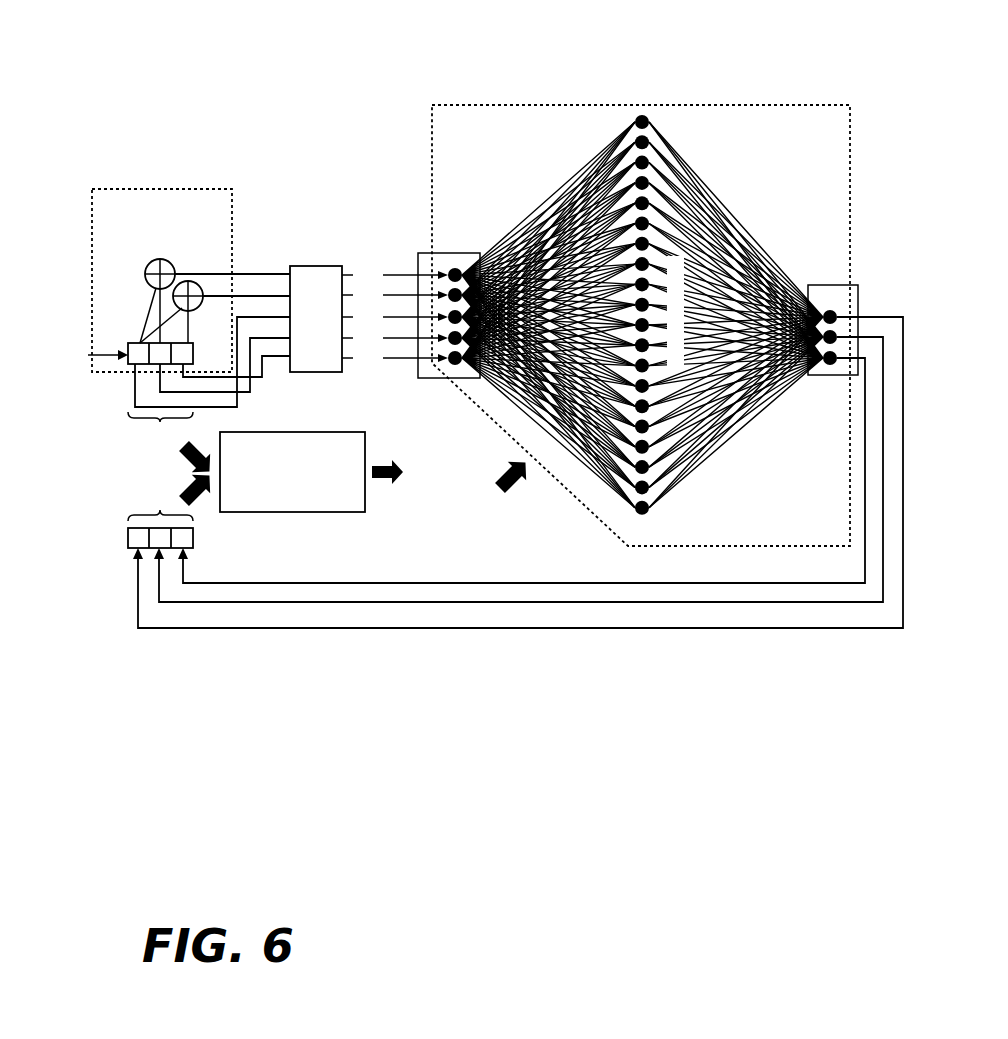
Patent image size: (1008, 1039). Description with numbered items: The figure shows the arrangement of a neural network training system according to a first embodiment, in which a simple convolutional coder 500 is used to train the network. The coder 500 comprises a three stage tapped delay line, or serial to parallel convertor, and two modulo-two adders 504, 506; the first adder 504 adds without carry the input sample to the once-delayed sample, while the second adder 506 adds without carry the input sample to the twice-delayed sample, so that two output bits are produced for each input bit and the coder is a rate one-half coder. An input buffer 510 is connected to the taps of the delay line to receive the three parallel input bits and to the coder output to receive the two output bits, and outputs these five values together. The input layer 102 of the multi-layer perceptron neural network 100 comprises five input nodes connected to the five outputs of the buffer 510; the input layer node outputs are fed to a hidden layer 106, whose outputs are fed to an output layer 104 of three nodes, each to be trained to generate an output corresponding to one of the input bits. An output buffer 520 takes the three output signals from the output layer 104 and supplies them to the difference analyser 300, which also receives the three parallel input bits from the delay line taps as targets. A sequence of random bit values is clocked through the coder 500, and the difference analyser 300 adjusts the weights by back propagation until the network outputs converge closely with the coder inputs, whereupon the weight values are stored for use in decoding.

The multi-layer perceptron neural network 100 is at (772, 103).
The input layer 102 is at (458, 253).
The output layer 104 is at (817, 285).
The hidden layer 106 is at (640, 115).
The difference analyser 300 is at (295, 513).
The convolutional coder 500 is at (158, 188).
The modulo-2 adder 504 is at (145, 274).
The modulo-2 adder 506 is at (200, 284).
The input buffer 510 is at (317, 265).
The output buffer 520 is at (128, 538).